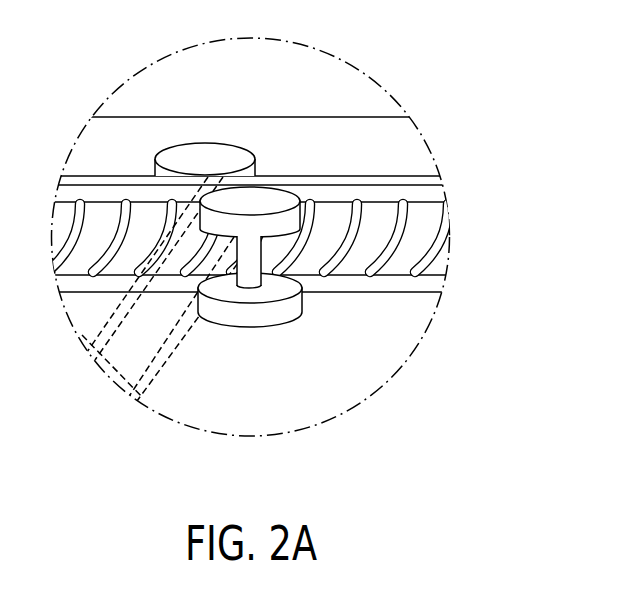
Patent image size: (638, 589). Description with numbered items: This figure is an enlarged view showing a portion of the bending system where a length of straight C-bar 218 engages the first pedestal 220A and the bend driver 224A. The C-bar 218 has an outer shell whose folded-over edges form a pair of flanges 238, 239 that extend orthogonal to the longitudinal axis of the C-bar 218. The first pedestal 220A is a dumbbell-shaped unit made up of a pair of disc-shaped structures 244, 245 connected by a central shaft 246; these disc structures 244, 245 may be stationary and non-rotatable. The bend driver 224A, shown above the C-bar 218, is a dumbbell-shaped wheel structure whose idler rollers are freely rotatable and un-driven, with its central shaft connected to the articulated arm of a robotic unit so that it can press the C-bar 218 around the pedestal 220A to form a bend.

The C-bar 218 is at (113, 211).
The bend driver 224A is at (203, 162).
The first pedestal 220A is at (257, 205).
The disc-shaped structure 244 is at (291, 233).
The disc-shaped structure 245 is at (273, 294).
The central shaft 246 is at (242, 284).
The flange 238 is at (438, 196).
The flange 239 is at (438, 286).